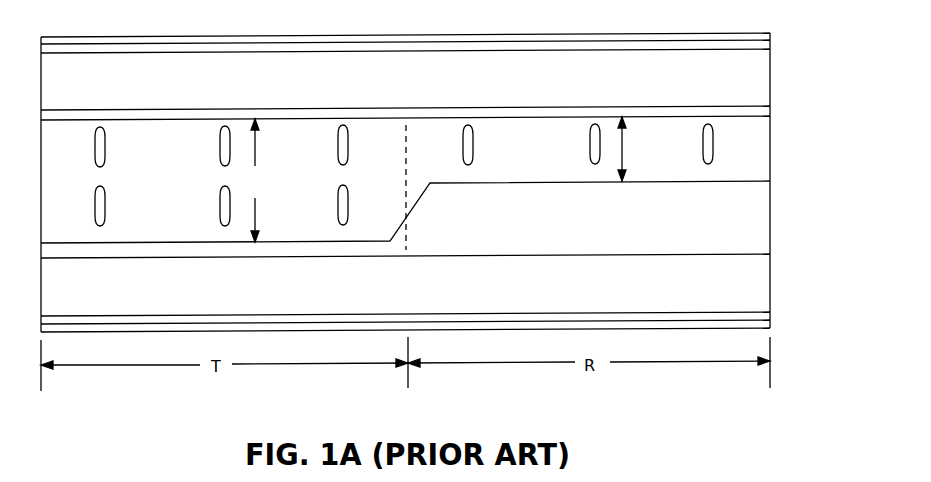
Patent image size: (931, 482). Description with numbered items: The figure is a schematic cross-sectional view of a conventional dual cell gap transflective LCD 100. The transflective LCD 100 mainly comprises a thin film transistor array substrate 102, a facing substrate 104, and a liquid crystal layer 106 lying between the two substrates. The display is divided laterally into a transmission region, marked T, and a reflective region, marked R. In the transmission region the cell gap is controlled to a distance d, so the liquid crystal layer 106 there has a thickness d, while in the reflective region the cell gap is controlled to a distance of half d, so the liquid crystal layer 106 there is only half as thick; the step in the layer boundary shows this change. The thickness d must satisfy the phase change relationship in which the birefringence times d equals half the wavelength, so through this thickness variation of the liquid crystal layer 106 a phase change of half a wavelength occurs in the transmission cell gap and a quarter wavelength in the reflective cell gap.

The dual cell gap transflective LCD 100 is at (679, 420).
The thin film transistor array substrate 102 is at (737, 73).
The facing substrate 104 is at (737, 287).
The liquid crystal layer 106 is at (737, 157).